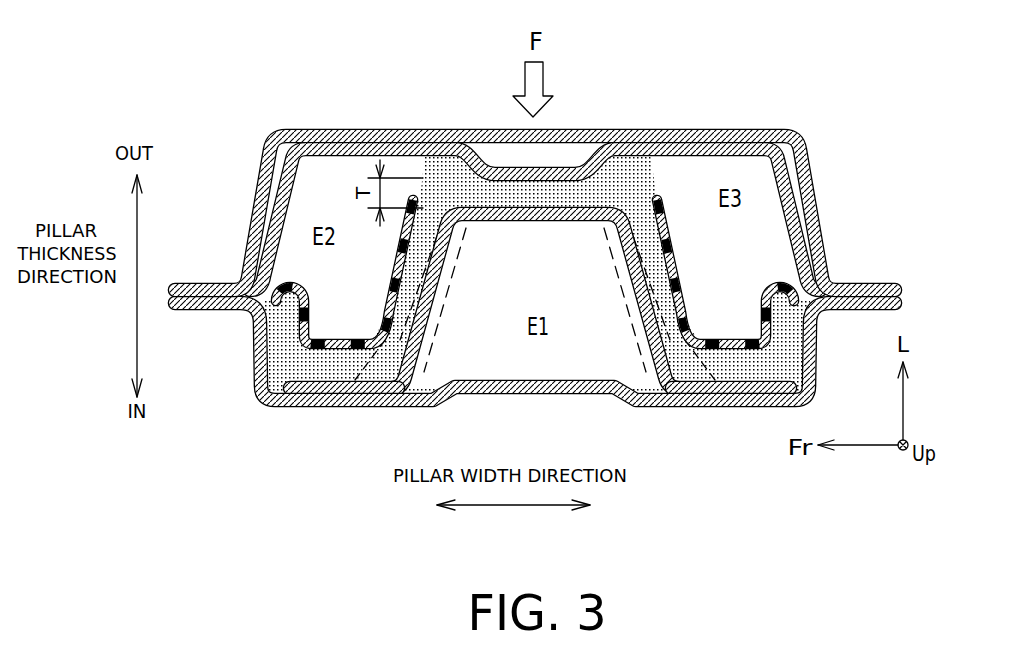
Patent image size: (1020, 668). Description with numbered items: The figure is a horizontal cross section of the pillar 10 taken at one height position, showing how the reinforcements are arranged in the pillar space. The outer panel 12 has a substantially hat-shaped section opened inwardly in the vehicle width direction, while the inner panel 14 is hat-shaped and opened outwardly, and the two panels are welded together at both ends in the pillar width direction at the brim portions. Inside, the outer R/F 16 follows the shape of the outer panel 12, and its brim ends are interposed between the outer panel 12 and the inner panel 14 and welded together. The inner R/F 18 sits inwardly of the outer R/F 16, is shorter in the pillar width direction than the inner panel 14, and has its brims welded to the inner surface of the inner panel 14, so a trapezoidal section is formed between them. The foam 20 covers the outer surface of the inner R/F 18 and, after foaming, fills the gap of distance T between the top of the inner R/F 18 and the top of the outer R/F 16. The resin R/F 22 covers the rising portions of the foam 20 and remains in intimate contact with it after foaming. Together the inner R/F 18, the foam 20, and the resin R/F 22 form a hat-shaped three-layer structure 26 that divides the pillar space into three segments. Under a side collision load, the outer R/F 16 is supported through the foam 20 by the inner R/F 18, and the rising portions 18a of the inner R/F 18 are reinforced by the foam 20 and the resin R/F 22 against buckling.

The pillar 10 is at (452, 116).
The outer panel 12 is at (313, 131).
The inner panel 14 is at (651, 404).
The outer R/F 16 is at (719, 131).
The inner R/F 18 is at (637, 318).
The rising portions 18a is at (356, 410).
The foam 20 is at (632, 172).
The resin R/F 22 is at (386, 298).
The three-layer structure 26 is at (487, 228).